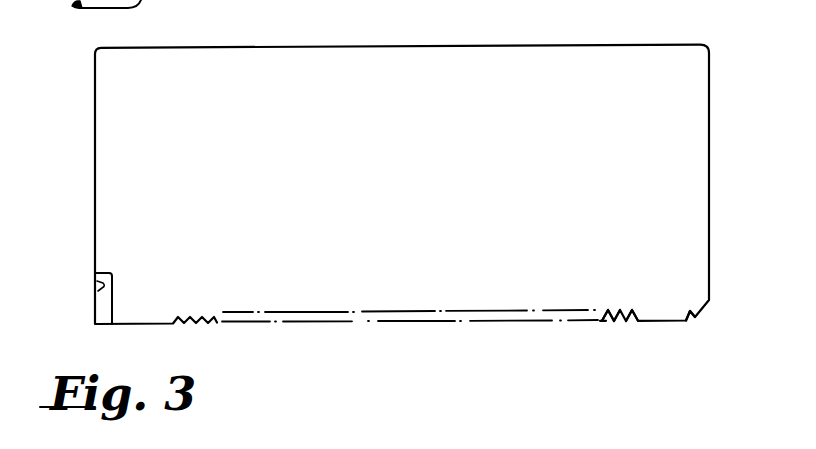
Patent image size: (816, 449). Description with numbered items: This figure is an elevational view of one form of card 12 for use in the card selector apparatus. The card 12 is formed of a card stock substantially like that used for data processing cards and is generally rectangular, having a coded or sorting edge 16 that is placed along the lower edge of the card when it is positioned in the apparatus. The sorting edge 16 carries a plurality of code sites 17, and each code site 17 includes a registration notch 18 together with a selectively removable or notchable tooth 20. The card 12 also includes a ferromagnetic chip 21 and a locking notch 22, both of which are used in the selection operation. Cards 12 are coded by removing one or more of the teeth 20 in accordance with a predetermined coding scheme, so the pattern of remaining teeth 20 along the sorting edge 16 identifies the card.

The card 12 is at (681, 60).
The sorting edge 16 is at (438, 323).
The code site 17 is at (605, 325).
The registration notch 18 is at (612, 308).
The notchable tooth 20 is at (637, 311).
The ferromagnetic chip 21 is at (102, 306).
The locking notch 22 is at (685, 323).